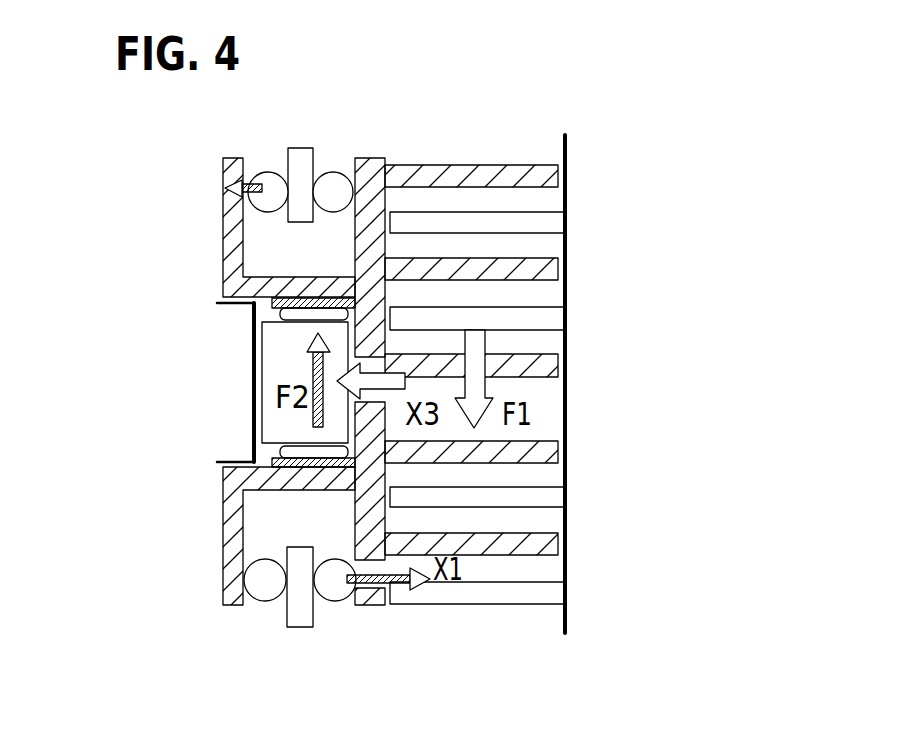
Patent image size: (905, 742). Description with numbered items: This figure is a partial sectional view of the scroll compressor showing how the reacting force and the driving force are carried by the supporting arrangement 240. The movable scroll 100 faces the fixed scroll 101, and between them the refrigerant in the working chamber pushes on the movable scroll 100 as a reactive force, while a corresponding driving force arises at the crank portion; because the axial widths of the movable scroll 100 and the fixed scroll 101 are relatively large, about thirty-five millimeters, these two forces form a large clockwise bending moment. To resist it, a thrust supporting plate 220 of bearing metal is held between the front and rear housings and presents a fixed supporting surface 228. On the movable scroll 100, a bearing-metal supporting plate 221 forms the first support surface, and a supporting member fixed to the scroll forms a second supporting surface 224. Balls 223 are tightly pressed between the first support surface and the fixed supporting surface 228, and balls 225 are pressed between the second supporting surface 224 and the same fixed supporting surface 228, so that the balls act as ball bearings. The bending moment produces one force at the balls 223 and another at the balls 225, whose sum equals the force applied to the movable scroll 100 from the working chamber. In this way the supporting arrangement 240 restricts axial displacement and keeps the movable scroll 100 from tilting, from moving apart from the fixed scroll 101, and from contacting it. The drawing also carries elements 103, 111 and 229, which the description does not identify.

The movable scroll 100 is at (472, 175).
The fixed scroll 101 is at (523, 227).
The holder frame 103 is at (223, 390).
The heat generating element 111 is at (267, 428).
The thrust supporting plate 220 is at (300, 163).
The supporting plate 221 is at (383, 167).
The balls 223 is at (340, 165).
The second supporting surface 224 is at (247, 203).
The balls 225 is at (255, 176).
The fixed supporting surface 228 is at (318, 583).
The ball 229 is at (285, 573).
The supporting arrangement 240 is at (291, 185).